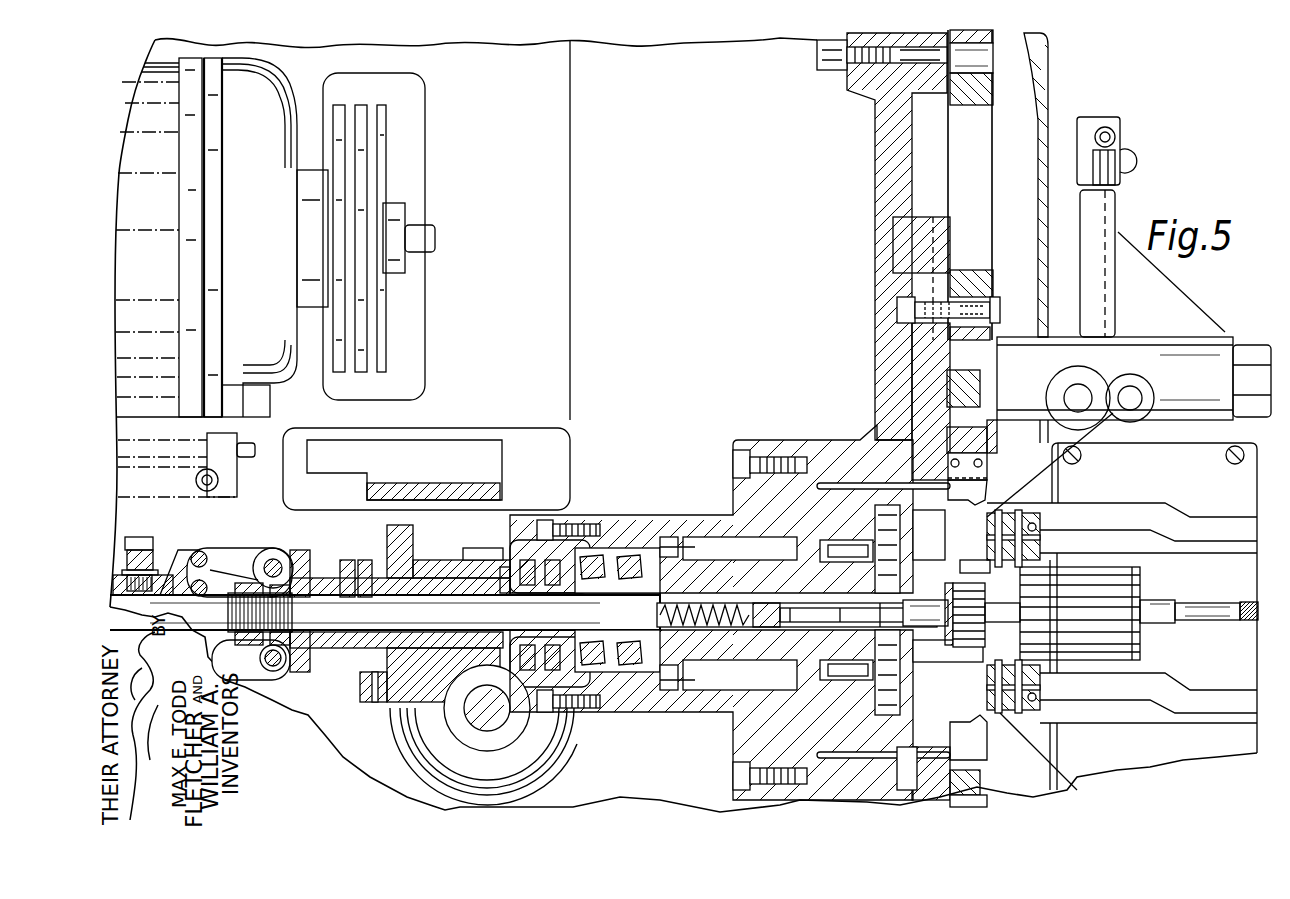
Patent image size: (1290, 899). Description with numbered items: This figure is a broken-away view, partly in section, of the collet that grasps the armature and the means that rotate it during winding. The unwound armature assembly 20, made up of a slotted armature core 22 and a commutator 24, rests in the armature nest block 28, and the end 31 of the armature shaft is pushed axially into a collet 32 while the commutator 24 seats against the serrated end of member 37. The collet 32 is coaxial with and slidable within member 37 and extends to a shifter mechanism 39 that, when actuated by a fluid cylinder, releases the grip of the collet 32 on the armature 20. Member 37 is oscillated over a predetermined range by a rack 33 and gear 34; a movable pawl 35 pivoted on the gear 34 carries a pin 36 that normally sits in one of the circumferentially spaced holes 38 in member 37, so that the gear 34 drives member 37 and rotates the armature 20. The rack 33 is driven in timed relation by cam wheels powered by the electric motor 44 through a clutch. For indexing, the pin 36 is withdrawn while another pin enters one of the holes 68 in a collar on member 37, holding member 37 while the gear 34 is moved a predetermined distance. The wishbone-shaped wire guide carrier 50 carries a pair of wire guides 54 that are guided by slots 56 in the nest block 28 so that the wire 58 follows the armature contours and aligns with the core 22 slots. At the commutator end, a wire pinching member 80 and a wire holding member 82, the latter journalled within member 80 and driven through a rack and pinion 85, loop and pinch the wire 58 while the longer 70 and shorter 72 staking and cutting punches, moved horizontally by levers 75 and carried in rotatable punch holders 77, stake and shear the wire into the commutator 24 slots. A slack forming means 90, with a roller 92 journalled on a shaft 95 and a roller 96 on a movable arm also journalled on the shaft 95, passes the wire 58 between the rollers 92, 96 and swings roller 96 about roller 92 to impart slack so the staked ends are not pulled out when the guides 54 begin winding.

The armature assembly 20 is at (1130, 633).
The slotted armature core 22 is at (1135, 577).
The commutator 24 is at (975, 623).
The armature nest block 28 is at (1228, 740).
The end of the armature shaft 31 is at (925, 600).
The collet 32 is at (948, 600).
The rack 33 is at (472, 686).
The gear 34 is at (480, 550).
The movable pawl 35 is at (360, 686).
The pin 36 is at (375, 705).
The member 37 is at (338, 560).
The circumferentially spaced holes 38 is at (370, 560).
The shifter mechanism 39 is at (207, 558).
The electric motor 44 is at (267, 110).
The wishbone shaped wire guide carrier 50 is at (1040, 545).
The wire guides 54 is at (995, 515).
The slots 56 is at (1120, 518).
The wire 58 is at (1000, 507).
The holes 68 is at (348, 560).
The longer staking and cutting punch 70 is at (972, 492).
The shorter staking and cutting punch 72 is at (985, 435).
The levers 75 is at (985, 280).
The punch holders 77 is at (980, 385).
The wire pinching member 80 is at (966, 575).
The wire holding member 82 is at (960, 574).
The rack and pinion 85 is at (672, 545).
The slack forming means 90 is at (1134, 378).
The roller 92 is at (1060, 378).
The shaft 95 is at (1080, 337).
The roller 96 is at (1150, 390).